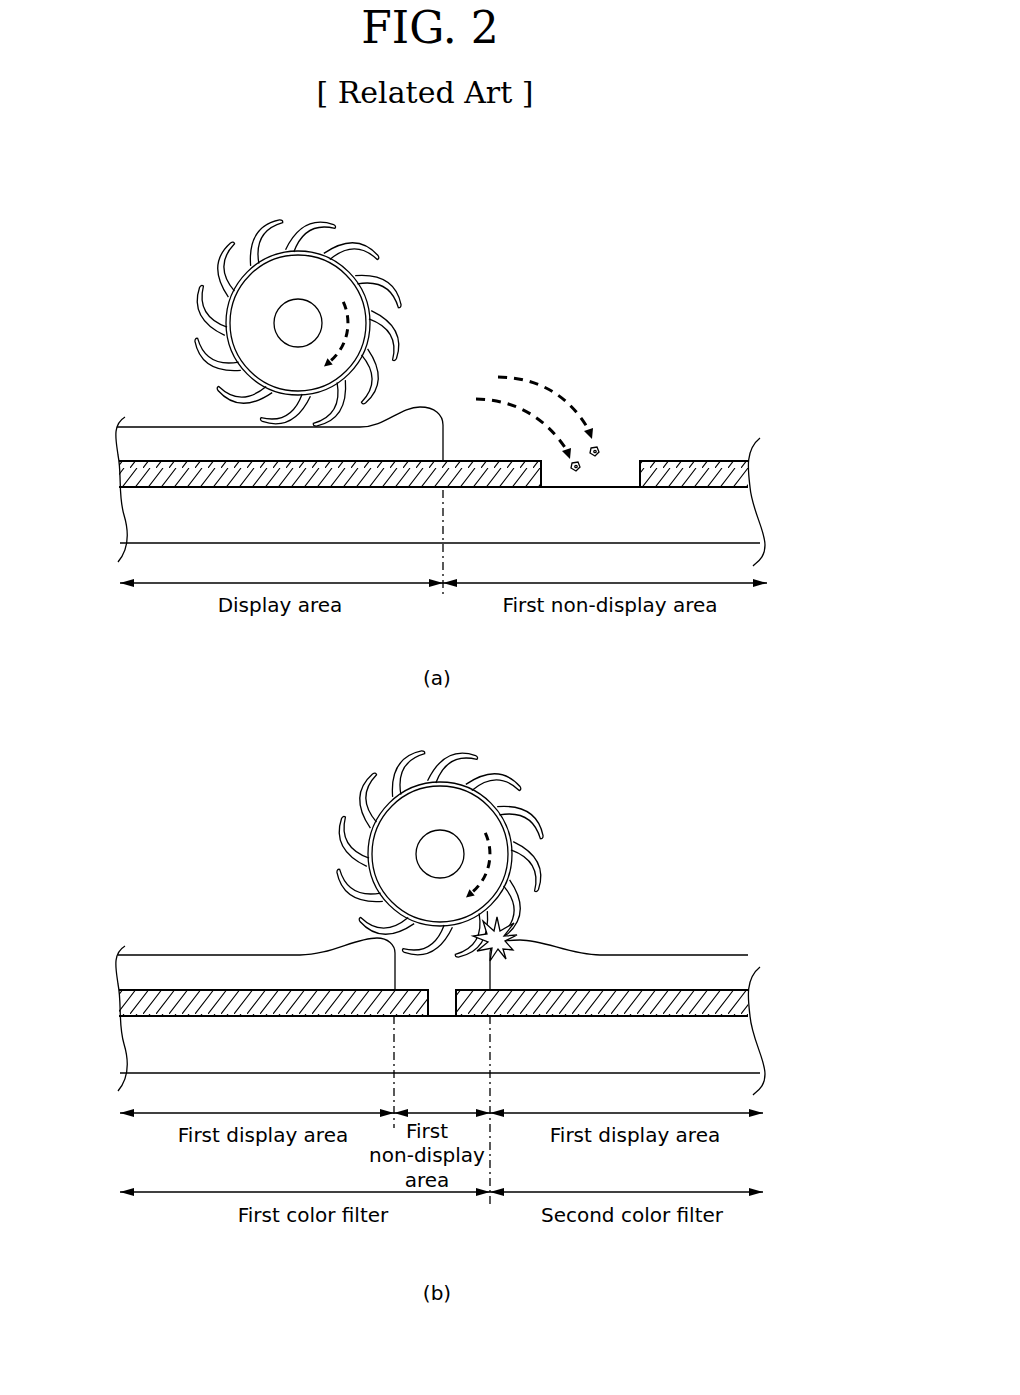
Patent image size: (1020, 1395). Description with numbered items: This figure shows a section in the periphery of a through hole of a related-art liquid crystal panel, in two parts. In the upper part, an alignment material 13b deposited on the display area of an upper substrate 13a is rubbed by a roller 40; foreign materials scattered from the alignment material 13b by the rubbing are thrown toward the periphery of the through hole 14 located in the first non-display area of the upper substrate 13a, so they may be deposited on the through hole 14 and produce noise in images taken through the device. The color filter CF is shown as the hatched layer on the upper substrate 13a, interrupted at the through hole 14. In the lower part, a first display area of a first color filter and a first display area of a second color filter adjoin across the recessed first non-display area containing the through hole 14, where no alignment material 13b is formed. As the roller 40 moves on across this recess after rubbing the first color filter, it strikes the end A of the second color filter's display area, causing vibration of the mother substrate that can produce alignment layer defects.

The roller 40 is at (250, 306).
The alignment material 13b is at (137, 448).
The upper substrate 13a is at (150, 512).
The through hole 14 is at (621, 466).
The color filter CF is at (455, 739).
The end of the first display area of the second color filter substrate A is at (517, 931).